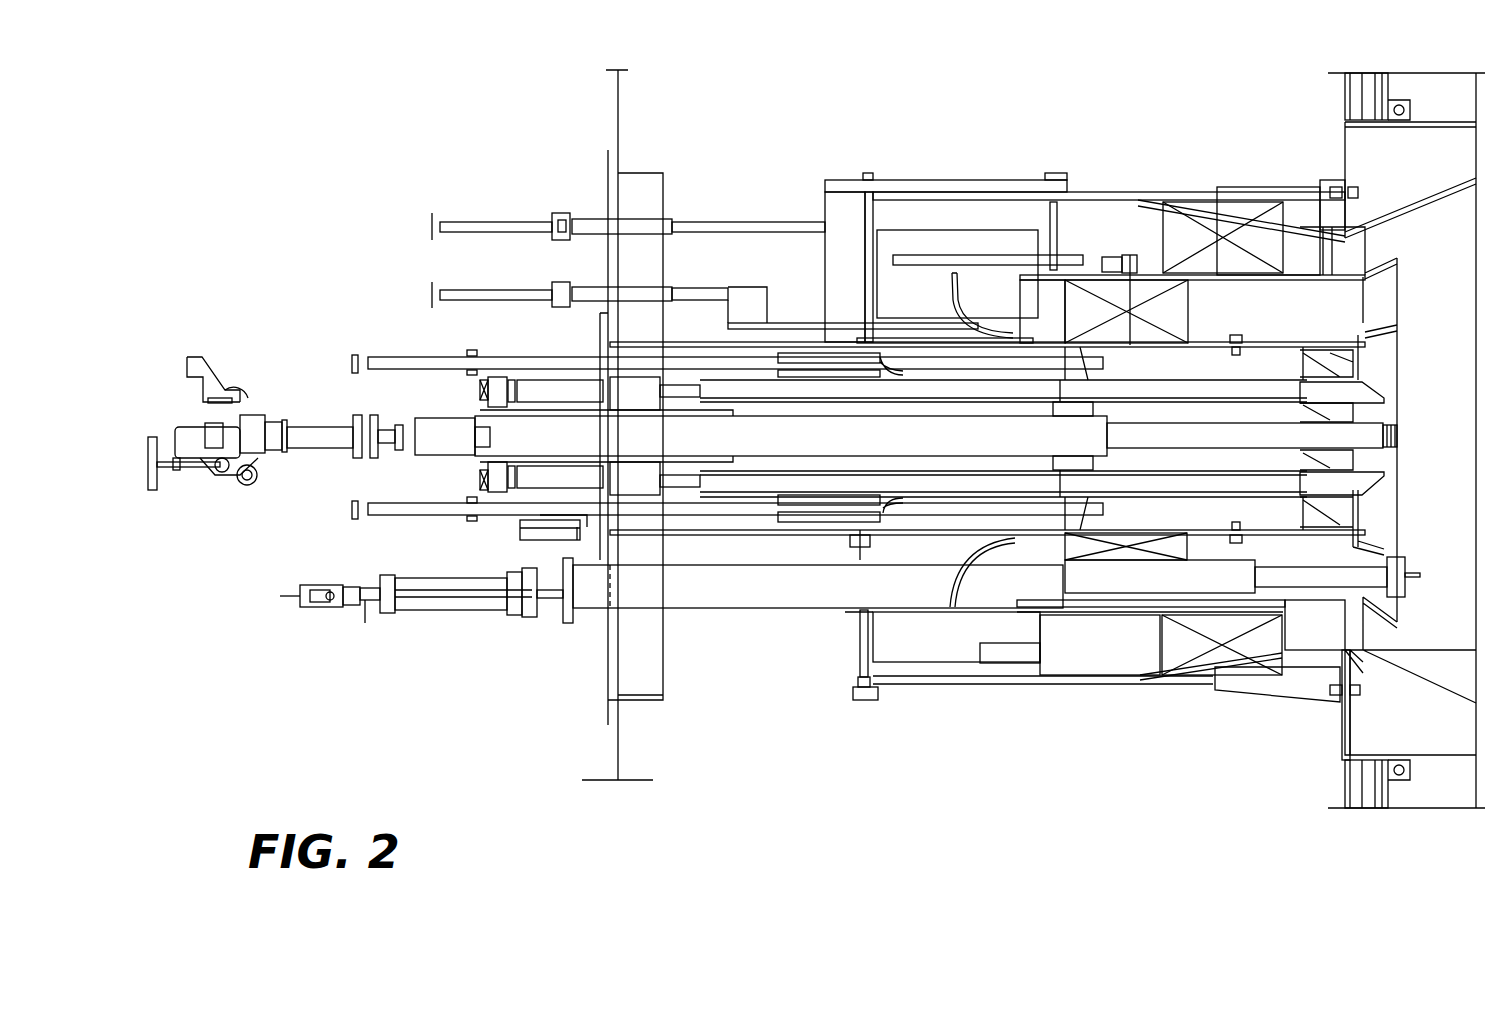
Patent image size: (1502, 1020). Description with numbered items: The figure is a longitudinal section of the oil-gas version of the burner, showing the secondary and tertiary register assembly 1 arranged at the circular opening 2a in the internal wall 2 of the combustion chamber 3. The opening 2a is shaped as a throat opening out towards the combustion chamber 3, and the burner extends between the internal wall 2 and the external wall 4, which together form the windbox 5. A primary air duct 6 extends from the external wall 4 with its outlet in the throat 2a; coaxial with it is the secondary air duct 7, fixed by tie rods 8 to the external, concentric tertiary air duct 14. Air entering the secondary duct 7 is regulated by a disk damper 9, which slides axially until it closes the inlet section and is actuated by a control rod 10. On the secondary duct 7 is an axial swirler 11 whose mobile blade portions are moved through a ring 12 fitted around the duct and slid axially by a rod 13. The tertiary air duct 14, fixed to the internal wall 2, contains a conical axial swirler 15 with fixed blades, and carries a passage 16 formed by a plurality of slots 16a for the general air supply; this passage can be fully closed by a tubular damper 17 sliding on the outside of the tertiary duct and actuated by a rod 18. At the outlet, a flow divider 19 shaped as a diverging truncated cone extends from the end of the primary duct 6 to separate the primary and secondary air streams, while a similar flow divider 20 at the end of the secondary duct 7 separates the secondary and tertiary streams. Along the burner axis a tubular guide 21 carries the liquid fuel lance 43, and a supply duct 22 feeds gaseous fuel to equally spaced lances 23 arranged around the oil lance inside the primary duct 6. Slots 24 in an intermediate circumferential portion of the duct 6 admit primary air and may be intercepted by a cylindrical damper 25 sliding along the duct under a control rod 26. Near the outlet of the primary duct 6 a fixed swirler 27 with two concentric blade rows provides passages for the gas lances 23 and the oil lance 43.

The secondary and tertiary register assembly 1 is at (1152, 708).
The internal wall 2 is at (1452, 165).
The circular opening 2a is at (1447, 407).
The combustion chamber 3 is at (1500, 381).
The external wall 4 is at (603, 640).
The windbox 5 is at (1002, 741).
The primary air duct 6 is at (702, 535).
The secondary air duct 7 is at (1065, 620).
The tie rods 8 is at (1320, 198).
The disk damper 9 is at (950, 280).
The control rod 10 is at (815, 320).
The axial swirler 11 is at (1160, 300).
The ring 12 is at (1092, 270).
The rod 13 is at (995, 255).
The tertiary air duct 14 is at (1290, 245).
The conical axial swirler 15 is at (1195, 640).
The passage 16 is at (955, 680).
The slots 16a is at (885, 625).
The tubular damper 17 is at (1107, 670).
The rod 18 is at (793, 220).
The flow divider 19 is at (1395, 335).
The flow divider 20 is at (1395, 270).
The tubular guide 21 is at (437, 415).
The supply duct 22 is at (530, 528).
The lances 23 is at (1367, 480).
The slots 24 is at (898, 535).
The cylindrical damper 25 is at (827, 513).
The control rod 26 is at (733, 515).
The fixed swirler 27 is at (1340, 505).
The liquid fuel lance 43 is at (1370, 435).